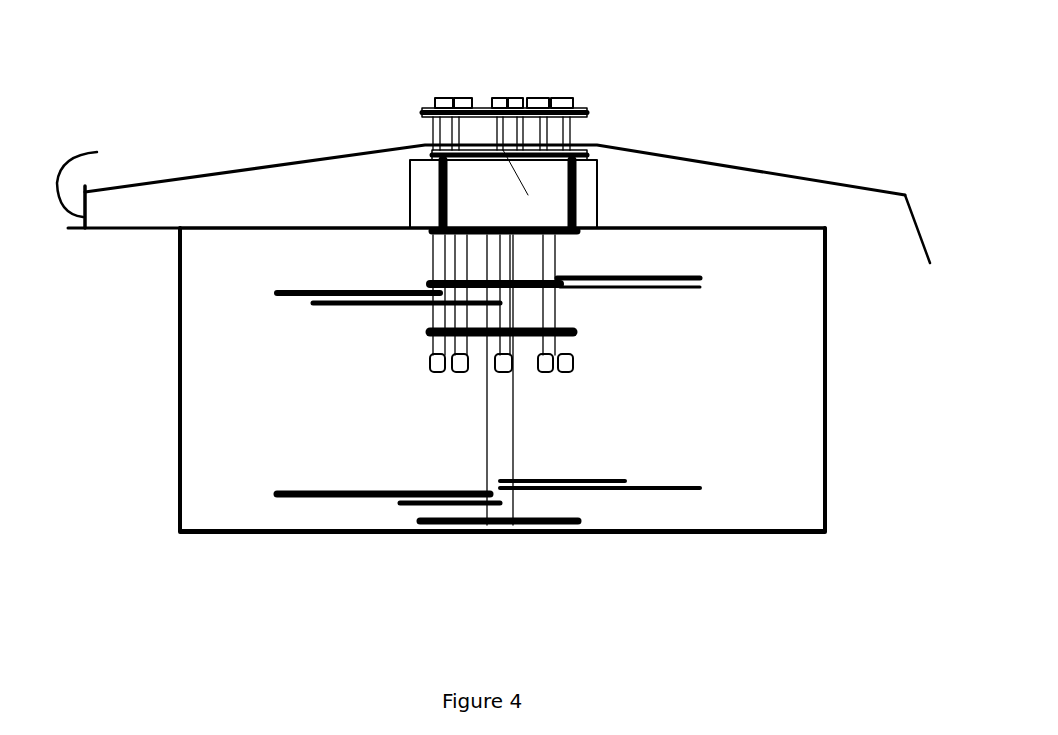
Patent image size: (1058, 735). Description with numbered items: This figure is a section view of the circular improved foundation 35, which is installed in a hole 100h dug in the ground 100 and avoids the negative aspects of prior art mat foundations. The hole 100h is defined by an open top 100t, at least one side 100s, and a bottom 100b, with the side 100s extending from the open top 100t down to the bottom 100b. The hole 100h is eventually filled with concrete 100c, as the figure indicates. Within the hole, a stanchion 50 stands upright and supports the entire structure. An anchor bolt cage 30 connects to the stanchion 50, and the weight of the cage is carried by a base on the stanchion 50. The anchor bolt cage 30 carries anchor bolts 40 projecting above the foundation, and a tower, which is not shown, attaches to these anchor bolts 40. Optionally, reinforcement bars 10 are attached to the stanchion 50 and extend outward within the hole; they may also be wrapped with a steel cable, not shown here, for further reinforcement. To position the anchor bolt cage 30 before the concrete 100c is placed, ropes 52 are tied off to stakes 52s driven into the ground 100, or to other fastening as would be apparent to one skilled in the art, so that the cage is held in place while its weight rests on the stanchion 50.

The reinforcement bars 10 is at (700, 487).
The anchor bolt cage 30 is at (650, 130).
The improved foundation 35 is at (108, 90).
The anchor bolts 40 is at (465, 88).
The stanchion 50 is at (503, 420).
The ropes 52 is at (148, 182).
The stakes 52s is at (104, 165).
The ground 100 is at (700, 598).
The hole 100h is at (320, 113).
The open top 100t is at (283, 222).
The side 100s is at (182, 382).
The bottom 100b is at (225, 530).
The concrete 100c is at (795, 497).